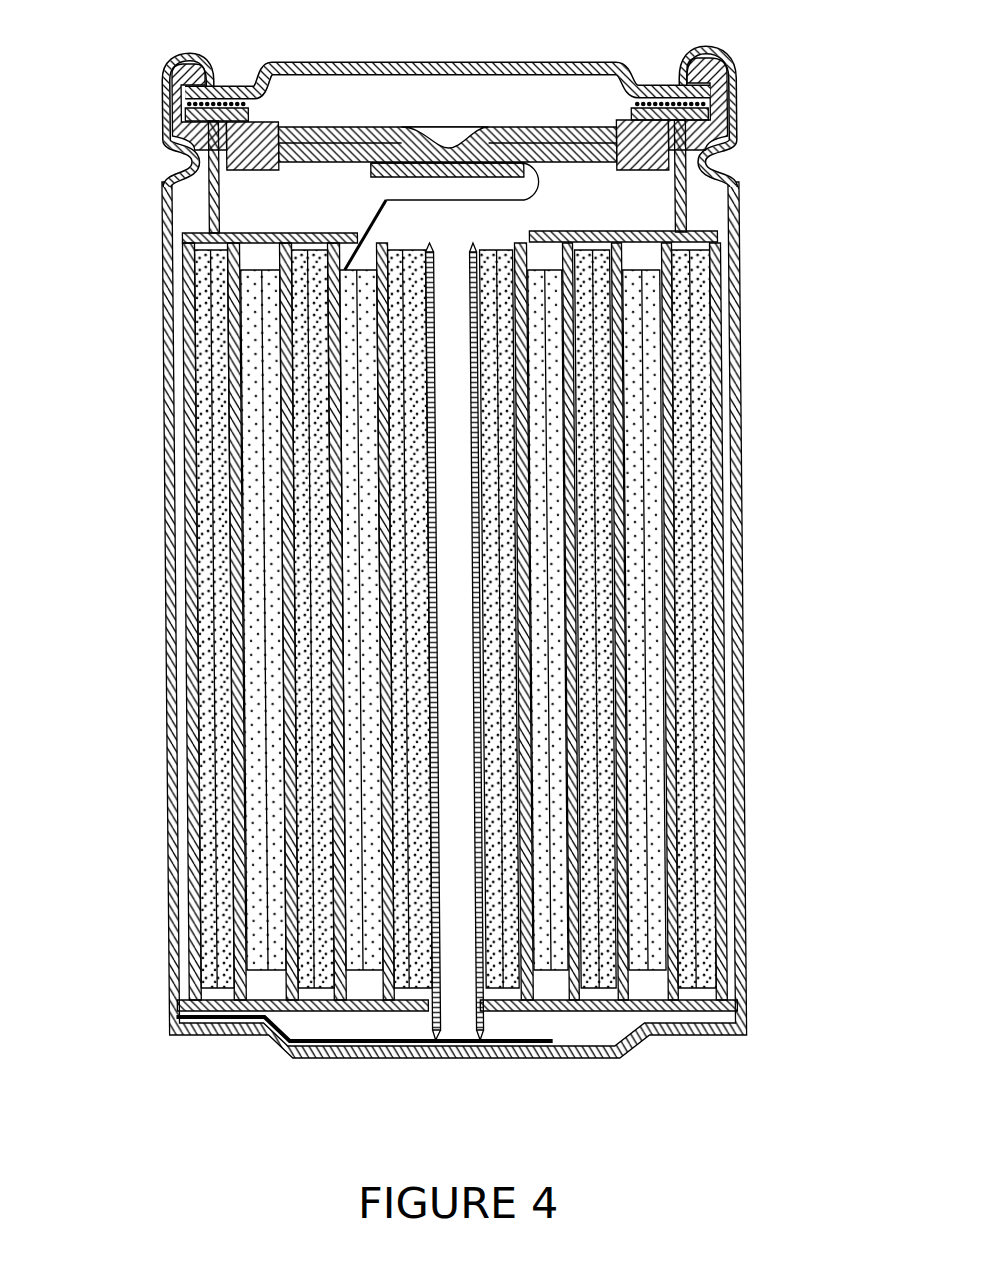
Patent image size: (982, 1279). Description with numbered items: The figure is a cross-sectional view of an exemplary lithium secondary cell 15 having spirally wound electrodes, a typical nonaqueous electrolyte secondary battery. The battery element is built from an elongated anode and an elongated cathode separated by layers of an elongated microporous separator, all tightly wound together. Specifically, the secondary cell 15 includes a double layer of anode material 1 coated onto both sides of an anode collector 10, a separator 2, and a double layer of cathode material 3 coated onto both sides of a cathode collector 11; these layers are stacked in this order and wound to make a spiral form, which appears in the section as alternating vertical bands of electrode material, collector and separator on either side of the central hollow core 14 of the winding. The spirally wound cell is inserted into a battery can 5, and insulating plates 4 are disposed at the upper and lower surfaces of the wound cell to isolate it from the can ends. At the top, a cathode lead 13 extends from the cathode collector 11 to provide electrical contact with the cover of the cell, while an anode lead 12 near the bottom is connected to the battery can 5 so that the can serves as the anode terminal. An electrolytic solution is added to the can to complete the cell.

The anode material 1 is at (693, 340).
The separator 2 is at (650, 672).
The cathode material 3 is at (672, 527).
The insulating plates 4 is at (623, 1010).
The battery can 5 is at (738, 190).
The anode collector 10 is at (687, 420).
The cathode collector 11 is at (647, 748).
The anode lead 12 is at (277, 1043).
The cathode lead 13 is at (490, 203).
The center core 14 is at (488, 1040).
The secondary cell 15 is at (137, 123).